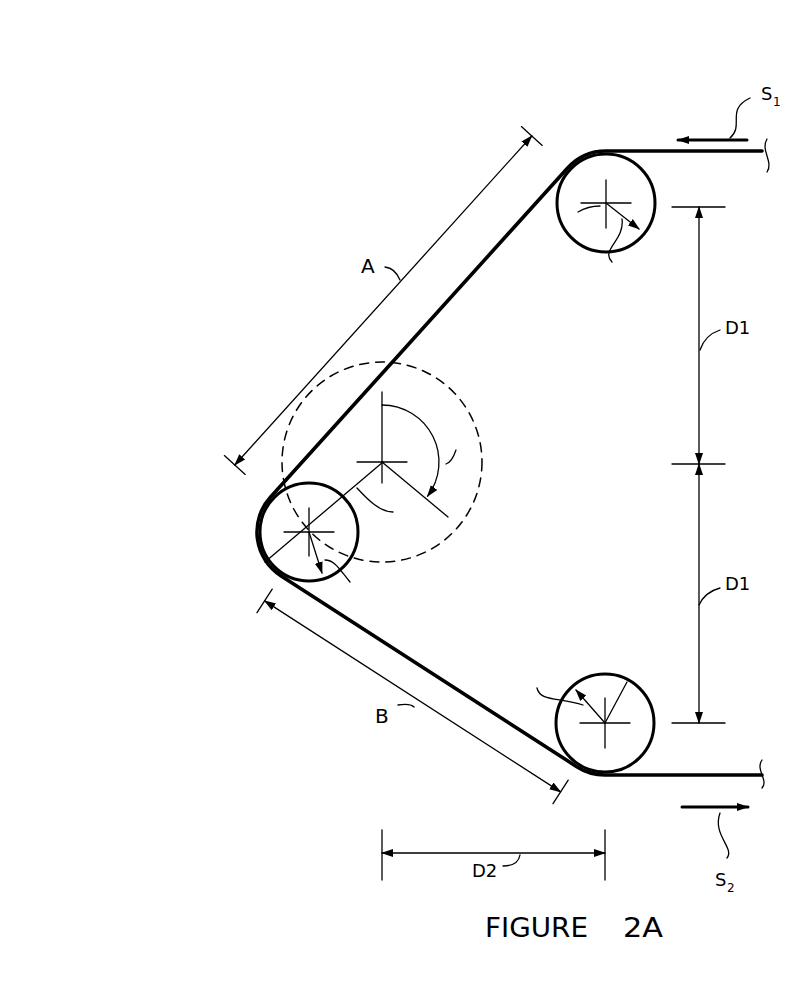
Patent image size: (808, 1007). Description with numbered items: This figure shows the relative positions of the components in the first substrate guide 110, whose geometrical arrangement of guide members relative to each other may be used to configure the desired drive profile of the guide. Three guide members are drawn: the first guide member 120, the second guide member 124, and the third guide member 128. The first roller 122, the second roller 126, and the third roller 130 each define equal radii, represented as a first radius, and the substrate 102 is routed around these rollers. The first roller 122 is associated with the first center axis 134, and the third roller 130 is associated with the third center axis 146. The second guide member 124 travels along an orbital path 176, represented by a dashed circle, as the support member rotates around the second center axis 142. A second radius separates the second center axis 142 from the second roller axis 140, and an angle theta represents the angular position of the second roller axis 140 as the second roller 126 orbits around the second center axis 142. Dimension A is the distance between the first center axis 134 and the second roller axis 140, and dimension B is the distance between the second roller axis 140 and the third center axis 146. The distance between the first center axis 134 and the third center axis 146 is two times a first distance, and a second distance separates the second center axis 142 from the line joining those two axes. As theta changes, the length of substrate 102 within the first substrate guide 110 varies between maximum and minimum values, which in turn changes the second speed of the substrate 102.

The substrate 102 is at (658, 150).
The first substrate guide 110 is at (407, 180).
The first guide member 120 is at (596, 251).
The first roller 122 is at (590, 233).
The second guide member 124 is at (255, 537).
The second roller 126 is at (272, 542).
The third guide member 128 is at (585, 684).
The third roller 130 is at (598, 687).
The first center axis 134 is at (578, 212).
The second roller axis 140 is at (265, 562).
The second center axis 142 is at (378, 456).
The third center axis 146 is at (627, 682).
The orbital path 176 is at (480, 480).